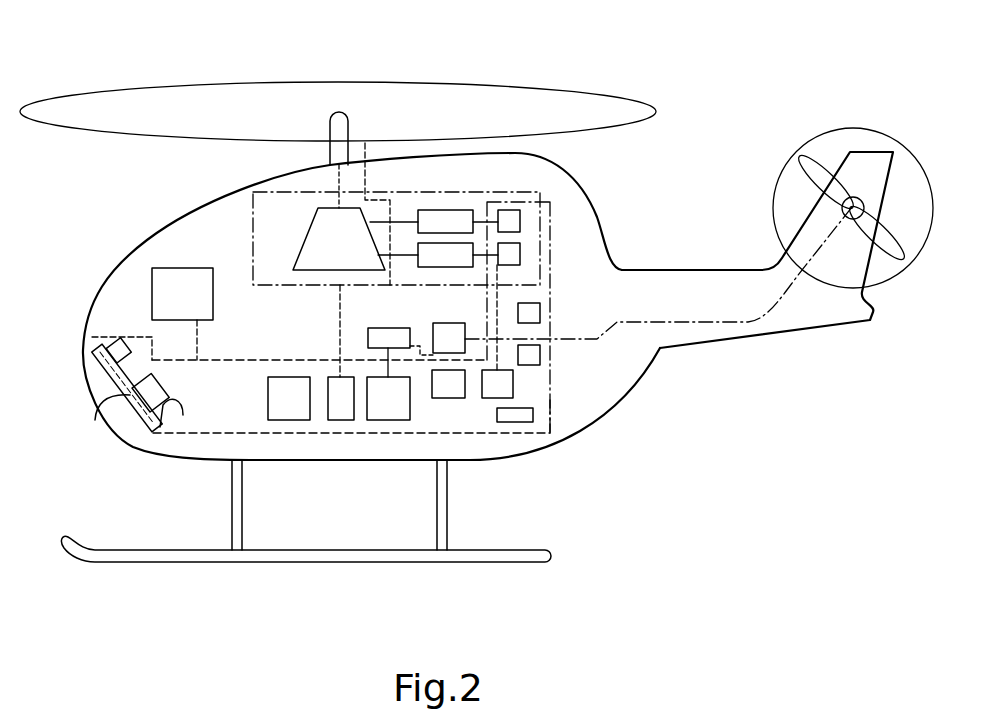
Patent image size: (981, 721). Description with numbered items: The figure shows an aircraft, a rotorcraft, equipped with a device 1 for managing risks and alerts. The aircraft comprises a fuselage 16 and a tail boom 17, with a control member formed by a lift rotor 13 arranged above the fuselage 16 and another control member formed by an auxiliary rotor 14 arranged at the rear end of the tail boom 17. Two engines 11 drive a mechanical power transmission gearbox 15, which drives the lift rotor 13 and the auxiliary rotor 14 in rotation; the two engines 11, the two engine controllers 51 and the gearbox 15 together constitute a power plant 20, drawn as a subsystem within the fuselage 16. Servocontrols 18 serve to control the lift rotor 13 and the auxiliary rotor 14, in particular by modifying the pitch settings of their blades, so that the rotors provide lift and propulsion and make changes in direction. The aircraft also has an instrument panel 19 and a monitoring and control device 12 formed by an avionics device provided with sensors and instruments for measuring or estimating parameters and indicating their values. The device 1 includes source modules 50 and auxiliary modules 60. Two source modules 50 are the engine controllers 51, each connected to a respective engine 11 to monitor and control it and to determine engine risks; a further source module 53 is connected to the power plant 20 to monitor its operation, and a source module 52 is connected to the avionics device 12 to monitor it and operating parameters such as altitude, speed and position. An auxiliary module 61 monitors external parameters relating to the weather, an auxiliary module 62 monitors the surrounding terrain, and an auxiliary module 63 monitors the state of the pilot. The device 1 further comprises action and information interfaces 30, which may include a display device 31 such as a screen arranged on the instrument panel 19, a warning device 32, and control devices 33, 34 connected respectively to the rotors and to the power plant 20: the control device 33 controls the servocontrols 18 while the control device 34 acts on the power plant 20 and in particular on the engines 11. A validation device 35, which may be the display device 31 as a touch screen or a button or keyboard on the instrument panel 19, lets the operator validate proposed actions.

The device for managing risks and alerts 1 is at (552, 281).
The engine 11 is at (450, 243).
The monitoring and control device 12 is at (152, 283).
The lift rotor 13 is at (587, 97).
The auxiliary rotor 14 is at (817, 132).
The mechanical power transmission gearbox 15 is at (306, 238).
The fuselage 16 is at (513, 385).
The tail boom 17 is at (760, 337).
The servocontrols 18 is at (447, 323).
The instrument panel 19 is at (95, 420).
The power plant 20 is at (515, 192).
The action and information interface 30 is at (336, 504).
The display device 31 is at (183, 415).
The warning device 32 is at (448, 400).
The control device 33 is at (397, 420).
The control device 34 is at (343, 420).
The validation device 35 is at (125, 337).
The source module 50 is at (491, 401).
The engine controller 51 is at (520, 253).
The source module 52 is at (290, 420).
The source module 53 is at (533, 415).
The auxiliary module 60 is at (635, 417).
The auxiliary module 61 is at (540, 313).
The auxiliary module 62 is at (540, 355).
The auxiliary module 63 is at (548, 418).